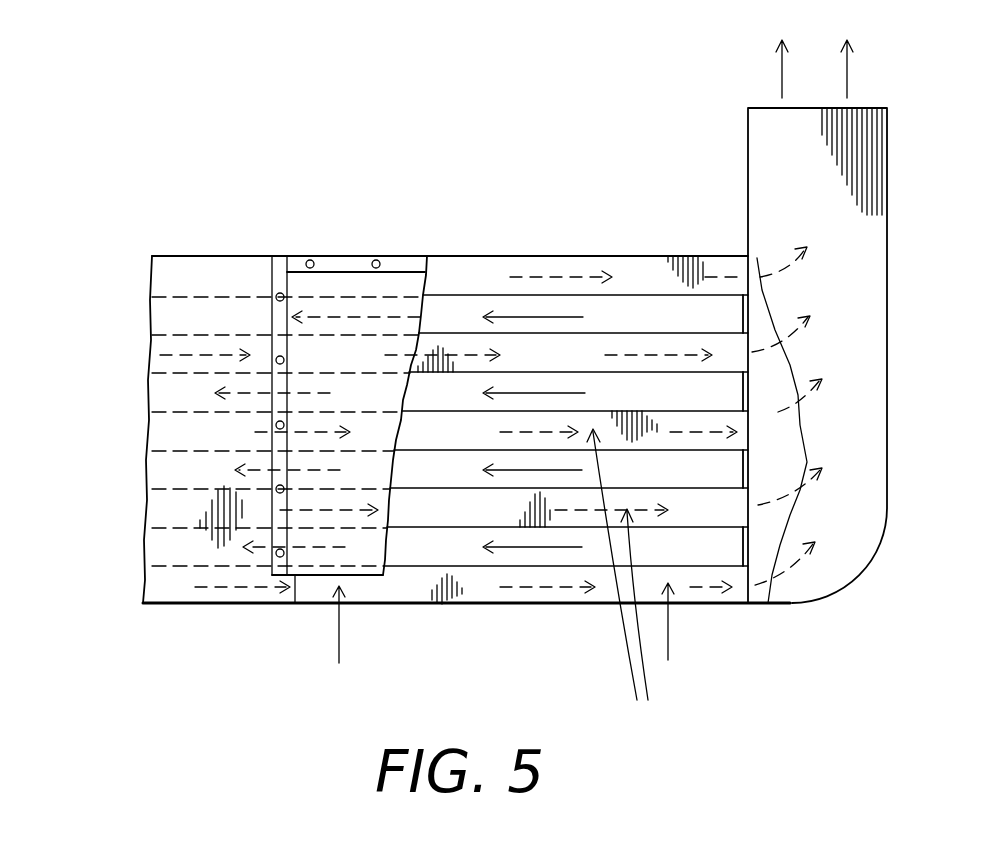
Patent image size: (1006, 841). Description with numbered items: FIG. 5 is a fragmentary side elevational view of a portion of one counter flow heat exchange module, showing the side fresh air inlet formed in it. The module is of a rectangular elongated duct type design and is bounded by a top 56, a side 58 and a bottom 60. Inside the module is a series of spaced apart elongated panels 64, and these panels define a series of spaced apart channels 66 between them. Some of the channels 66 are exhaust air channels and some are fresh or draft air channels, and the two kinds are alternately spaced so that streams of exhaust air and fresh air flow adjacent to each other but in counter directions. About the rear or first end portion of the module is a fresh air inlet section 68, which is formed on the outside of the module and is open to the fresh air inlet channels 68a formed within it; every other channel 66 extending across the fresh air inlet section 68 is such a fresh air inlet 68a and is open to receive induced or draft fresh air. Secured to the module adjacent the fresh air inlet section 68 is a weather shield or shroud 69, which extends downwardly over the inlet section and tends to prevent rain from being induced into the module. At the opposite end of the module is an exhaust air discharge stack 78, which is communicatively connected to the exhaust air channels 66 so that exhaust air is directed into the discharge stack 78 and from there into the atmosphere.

The top 56 is at (416, 256).
The side 58 is at (183, 545).
The bottom 60 is at (240, 603).
The elongated panels 64 is at (688, 450).
The channels 66 is at (625, 583).
The fresh air inlet section 68 is at (509, 172).
The fresh air inlet channels 68a is at (608, 387).
The weather shield or shroud 69 is at (335, 283).
The exhaust air discharge stack 78 is at (850, 210).